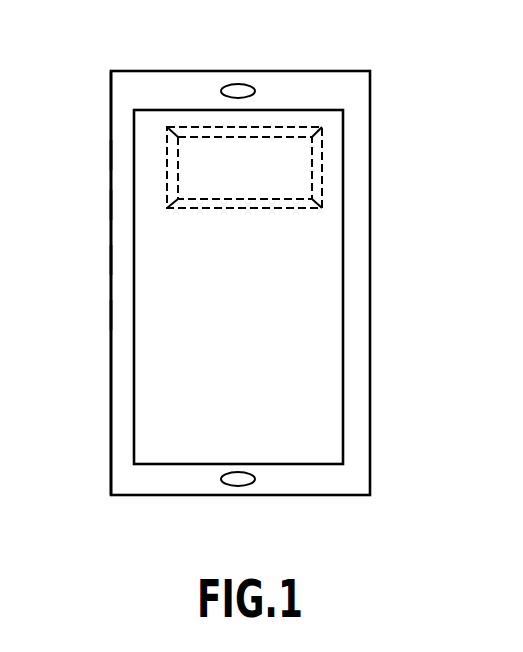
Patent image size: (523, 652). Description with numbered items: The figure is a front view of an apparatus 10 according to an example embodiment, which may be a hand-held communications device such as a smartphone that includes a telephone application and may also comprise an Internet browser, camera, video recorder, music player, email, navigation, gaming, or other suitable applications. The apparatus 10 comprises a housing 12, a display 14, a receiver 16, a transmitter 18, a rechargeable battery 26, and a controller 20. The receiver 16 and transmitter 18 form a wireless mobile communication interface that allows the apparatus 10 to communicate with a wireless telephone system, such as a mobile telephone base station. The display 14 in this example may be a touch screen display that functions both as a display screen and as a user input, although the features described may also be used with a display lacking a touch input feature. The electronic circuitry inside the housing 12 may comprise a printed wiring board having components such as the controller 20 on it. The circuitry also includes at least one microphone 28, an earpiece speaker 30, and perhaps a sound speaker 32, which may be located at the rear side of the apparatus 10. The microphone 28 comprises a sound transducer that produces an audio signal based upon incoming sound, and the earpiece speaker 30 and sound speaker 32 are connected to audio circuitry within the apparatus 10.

The apparatus 10 is at (398, 62).
The housing 12 is at (110, 112).
The display 14 is at (318, 228).
The receiver 16 is at (110, 163).
The transmitter 18 is at (110, 211).
The controller 20 is at (110, 266).
The rechargeable battery 26 is at (110, 321).
The microphone 28 is at (253, 482).
The earpiece speaker 30 is at (238, 84).
The sound speaker 32 is at (313, 147).